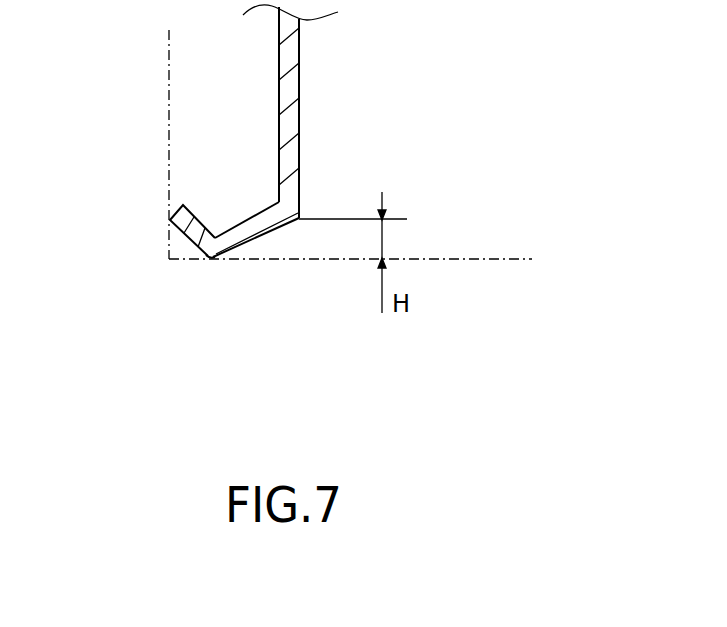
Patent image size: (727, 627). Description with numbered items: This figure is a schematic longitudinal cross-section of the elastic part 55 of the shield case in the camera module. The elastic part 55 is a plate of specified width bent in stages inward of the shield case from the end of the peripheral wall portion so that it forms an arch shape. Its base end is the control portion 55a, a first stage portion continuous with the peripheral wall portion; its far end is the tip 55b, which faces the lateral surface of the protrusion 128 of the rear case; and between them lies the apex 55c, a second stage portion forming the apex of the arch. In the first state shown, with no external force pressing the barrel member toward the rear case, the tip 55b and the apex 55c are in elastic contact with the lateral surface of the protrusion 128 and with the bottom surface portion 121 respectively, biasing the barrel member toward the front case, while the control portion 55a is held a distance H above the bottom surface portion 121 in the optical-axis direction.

The protrusion 128 is at (168, 103).
The bottom surface portion 121 is at (497, 262).
The elastic part 55 is at (282, 202).
The control portion 55a is at (297, 219).
The tip 55b is at (181, 232).
The apex 55c is at (235, 296).